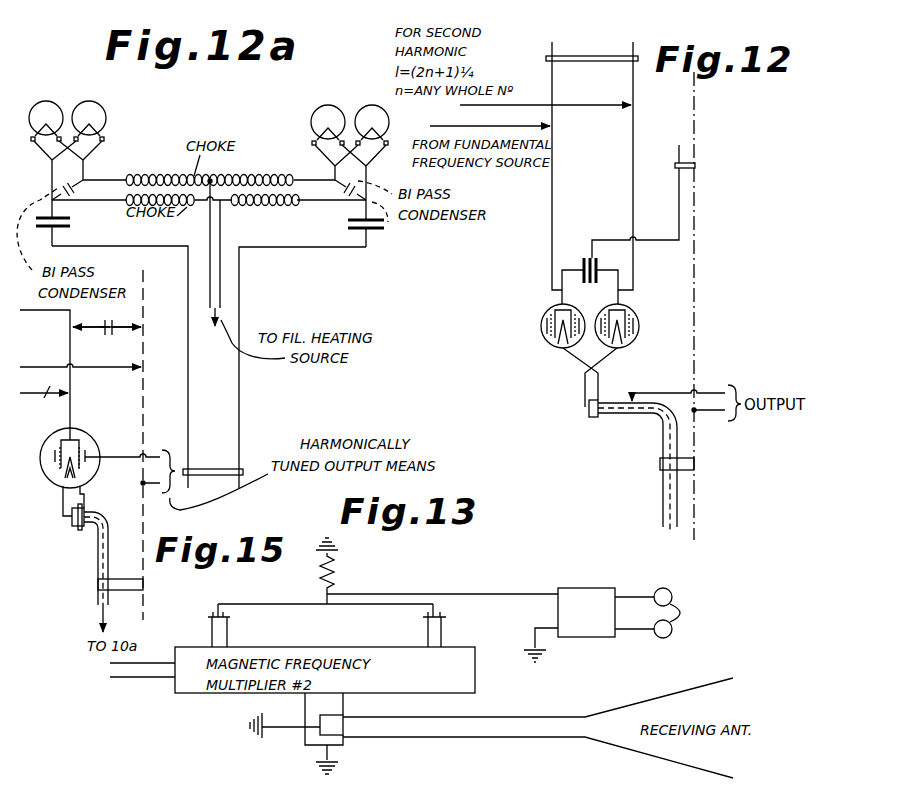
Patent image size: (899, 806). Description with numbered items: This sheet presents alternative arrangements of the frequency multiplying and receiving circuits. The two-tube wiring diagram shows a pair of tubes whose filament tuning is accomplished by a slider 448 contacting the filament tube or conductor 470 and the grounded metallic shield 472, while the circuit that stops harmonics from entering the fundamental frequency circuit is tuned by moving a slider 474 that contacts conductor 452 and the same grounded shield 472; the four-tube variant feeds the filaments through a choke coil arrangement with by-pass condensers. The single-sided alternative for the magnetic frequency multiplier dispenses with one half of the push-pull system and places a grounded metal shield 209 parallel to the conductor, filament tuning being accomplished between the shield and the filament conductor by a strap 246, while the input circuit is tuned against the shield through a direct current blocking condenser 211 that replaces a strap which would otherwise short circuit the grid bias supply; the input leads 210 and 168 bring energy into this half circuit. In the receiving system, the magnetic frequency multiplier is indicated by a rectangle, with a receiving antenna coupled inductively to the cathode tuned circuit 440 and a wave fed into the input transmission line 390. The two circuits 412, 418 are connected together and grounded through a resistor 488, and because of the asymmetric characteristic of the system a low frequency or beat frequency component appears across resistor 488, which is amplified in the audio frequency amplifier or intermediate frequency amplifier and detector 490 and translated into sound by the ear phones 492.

In FIG. 15, the input lead 210 is at (62, 312).
In FIG. 15, the direct current blocking condenser 211 is at (113, 320).
In FIG. 15, the input lead 168 is at (44, 405).
In FIG. 15, the shield 209 is at (146, 520).
In FIG. 15, the strap 246 is at (100, 585).
In FIG. 13, the resistor 488 is at (336, 578).
In FIG. 13, the circuit 412 is at (210, 630).
In FIG. 13, the circuit 418 is at (442, 638).
In FIG. 13, the input transmission line 390 is at (126, 672).
In FIG. 13, the cathode tuned circuit 440 is at (316, 702).
In FIG. 13, the audio frequency amplifier 490 is at (602, 632).
In FIG. 13, the ear phones 492 is at (666, 589).
In FIG. 12, the metallic shield 472 is at (693, 363).
In FIG. 12, the slider 474 is at (676, 165).
In FIG. 12, the conductor 452 is at (677, 198).
In FIG. 12, the filament tube or conductor 470 is at (662, 434).
In FIG. 12, the slider 448 is at (661, 469).